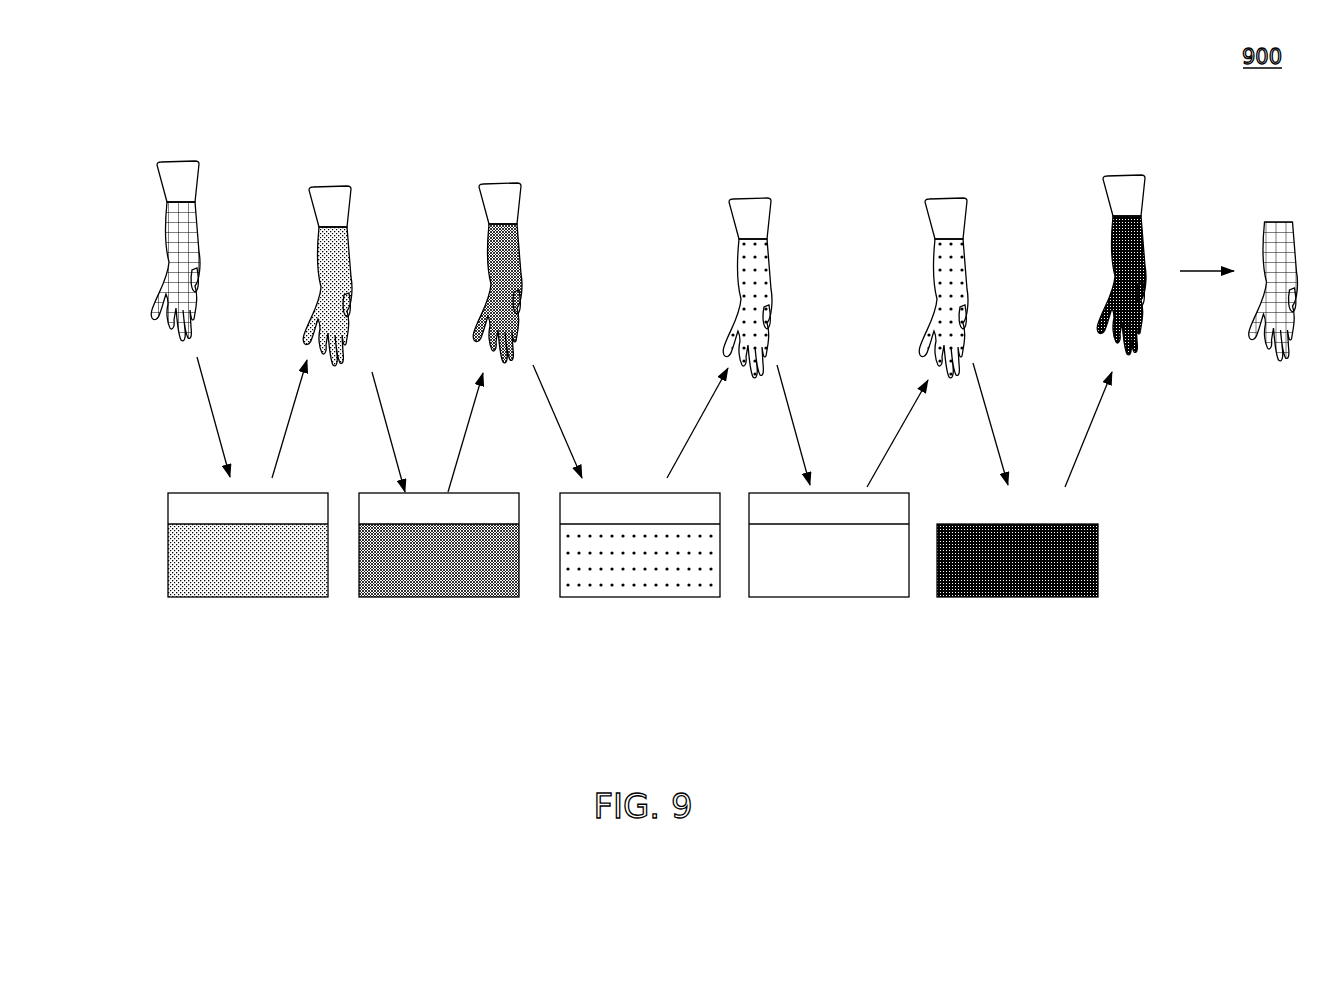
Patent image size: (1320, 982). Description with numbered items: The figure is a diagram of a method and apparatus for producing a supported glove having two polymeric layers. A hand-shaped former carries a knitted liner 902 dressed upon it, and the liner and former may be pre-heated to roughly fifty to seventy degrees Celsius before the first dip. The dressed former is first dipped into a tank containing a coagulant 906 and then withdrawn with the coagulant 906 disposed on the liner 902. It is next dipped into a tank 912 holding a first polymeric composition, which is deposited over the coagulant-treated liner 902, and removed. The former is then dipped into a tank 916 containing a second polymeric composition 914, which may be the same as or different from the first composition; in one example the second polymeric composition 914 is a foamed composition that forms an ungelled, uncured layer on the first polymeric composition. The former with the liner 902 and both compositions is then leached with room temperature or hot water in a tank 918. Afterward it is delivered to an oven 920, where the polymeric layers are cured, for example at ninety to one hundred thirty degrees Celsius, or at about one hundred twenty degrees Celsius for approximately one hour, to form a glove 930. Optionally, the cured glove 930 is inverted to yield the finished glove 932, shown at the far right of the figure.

The knitted liner 902 is at (168, 244).
The coagulant 906 is at (196, 580).
The tank 912 is at (454, 614).
The second polymeric composition 914 is at (735, 282).
The tank 916 is at (674, 614).
The tank 918 is at (853, 614).
The oven 920 is at (1036, 614).
The glove 930 is at (1108, 262).
The glove 932 is at (1272, 362).